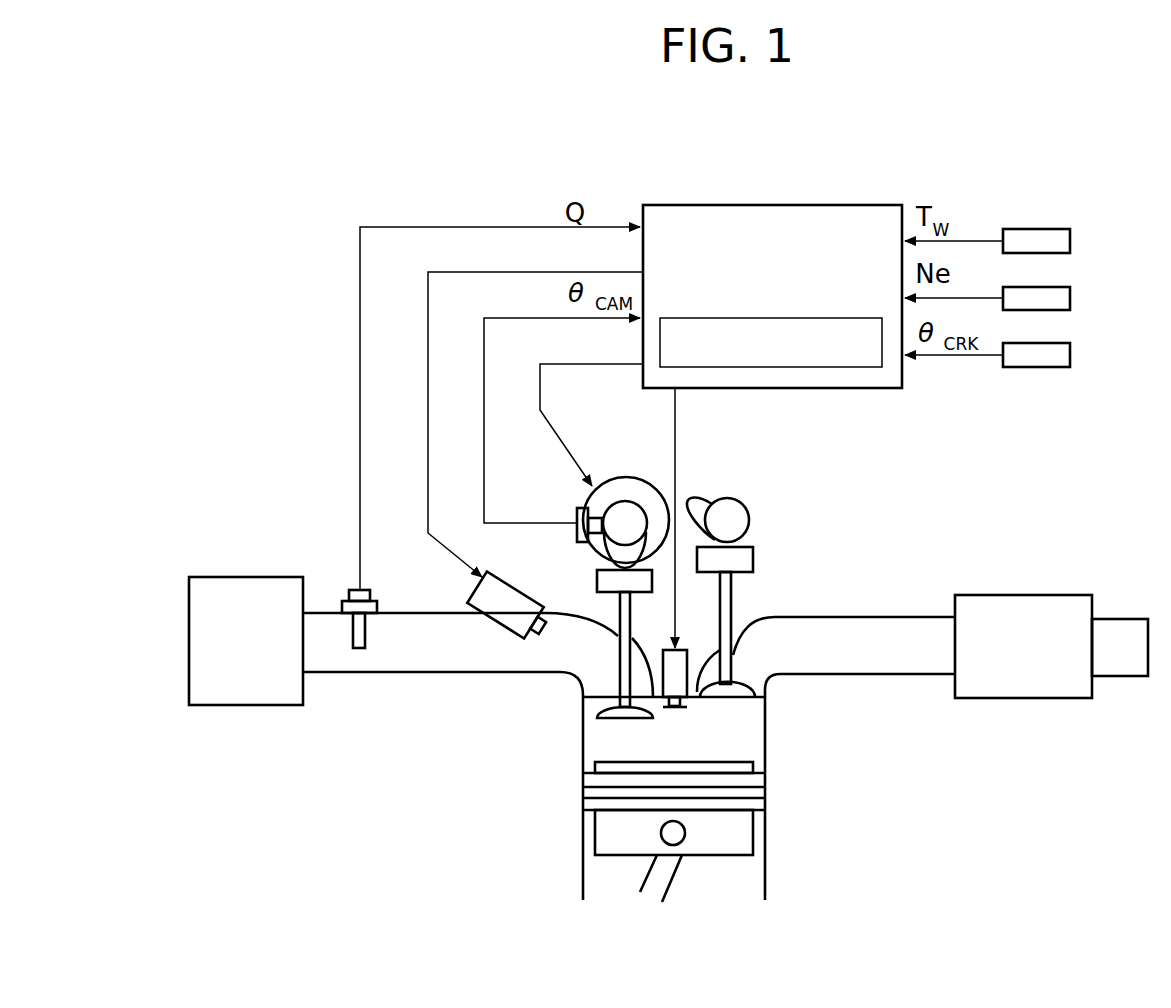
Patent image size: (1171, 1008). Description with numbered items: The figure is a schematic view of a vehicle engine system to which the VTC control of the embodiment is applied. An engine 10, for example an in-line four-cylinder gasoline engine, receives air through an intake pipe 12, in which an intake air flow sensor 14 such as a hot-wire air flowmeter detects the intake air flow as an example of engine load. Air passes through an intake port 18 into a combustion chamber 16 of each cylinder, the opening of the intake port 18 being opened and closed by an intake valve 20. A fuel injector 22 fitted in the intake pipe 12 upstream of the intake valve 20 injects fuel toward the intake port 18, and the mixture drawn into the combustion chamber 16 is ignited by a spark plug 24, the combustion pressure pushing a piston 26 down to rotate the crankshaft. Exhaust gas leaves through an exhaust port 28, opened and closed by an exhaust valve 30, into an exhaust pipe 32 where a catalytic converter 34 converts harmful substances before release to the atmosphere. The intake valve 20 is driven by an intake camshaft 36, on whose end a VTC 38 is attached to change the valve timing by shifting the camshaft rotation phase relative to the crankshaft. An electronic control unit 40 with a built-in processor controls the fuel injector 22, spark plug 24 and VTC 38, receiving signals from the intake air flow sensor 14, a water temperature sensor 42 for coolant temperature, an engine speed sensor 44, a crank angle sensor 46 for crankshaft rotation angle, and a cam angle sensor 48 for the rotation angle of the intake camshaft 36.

The engine 10 is at (582, 843).
The intake pipe 12 is at (398, 672).
The intake air flow sensor 14 is at (350, 588).
The combustion chamber 16 is at (640, 743).
The intake port 18 is at (588, 662).
The intake valve 20 is at (618, 713).
The fuel injector 22 is at (470, 590).
The spark plug 24 is at (673, 707).
The piston 26 is at (738, 833).
The exhaust port 28 is at (750, 668).
The exhaust valve 30 is at (717, 690).
The exhaust pipe 32 is at (852, 615).
The catalytic converter 34 is at (1026, 595).
The intake camshaft 36 is at (618, 525).
The VTC 38 is at (620, 474).
The electronic control unit 40 is at (790, 205).
The water temperature sensor 42 is at (1070, 229).
The engine speed sensor 44 is at (1070, 287).
The crank angle sensor 46 is at (1070, 343).
The cam angle sensor 48 is at (577, 510).